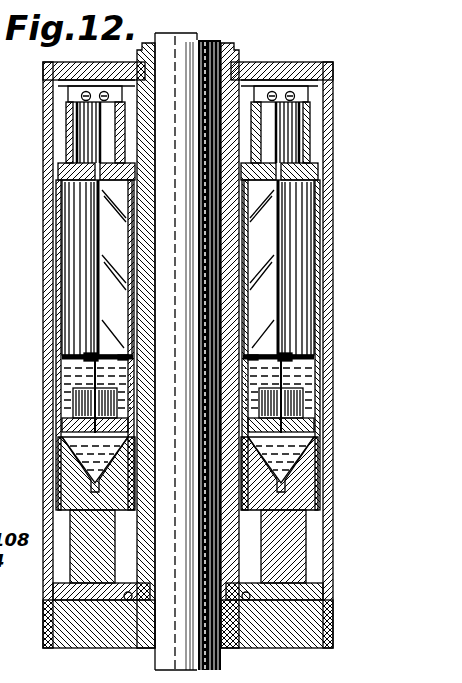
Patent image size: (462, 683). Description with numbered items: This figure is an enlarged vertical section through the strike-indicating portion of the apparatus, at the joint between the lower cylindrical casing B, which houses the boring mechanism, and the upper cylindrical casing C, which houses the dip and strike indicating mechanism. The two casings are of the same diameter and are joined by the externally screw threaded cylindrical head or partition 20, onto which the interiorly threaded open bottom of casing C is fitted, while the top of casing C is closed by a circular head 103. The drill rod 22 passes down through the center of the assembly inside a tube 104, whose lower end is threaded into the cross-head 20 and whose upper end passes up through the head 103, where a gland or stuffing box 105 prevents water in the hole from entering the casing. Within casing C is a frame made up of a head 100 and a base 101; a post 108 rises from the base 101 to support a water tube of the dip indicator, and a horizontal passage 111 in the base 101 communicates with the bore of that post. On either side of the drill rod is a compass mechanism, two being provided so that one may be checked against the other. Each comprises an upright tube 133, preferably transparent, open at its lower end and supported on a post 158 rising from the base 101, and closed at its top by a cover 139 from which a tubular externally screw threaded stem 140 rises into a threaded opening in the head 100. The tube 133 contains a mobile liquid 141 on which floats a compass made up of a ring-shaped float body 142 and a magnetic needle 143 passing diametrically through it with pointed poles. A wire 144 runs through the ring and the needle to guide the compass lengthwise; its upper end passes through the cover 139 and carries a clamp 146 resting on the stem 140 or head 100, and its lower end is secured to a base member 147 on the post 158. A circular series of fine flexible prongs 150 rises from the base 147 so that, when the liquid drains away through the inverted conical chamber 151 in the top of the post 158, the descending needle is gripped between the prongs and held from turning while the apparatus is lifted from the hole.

The cylindrical head or partition 20 is at (298, 645).
The drill rod 22 is at (177, 52).
The head 100 is at (331, 110).
The base 101 is at (52, 598).
The circular head 103 is at (306, 62).
The tube 104 is at (227, 42).
The gland or stuffing box 105 is at (243, 60).
The post 108 is at (251, 220).
The horizontal passage 111 is at (128, 600).
The upright tube 133 is at (58, 266).
The cover 139 is at (58, 173).
The tubular externally screw threaded stem 140 is at (67, 133).
The mobile liquid 141 is at (74, 405).
The float body 142 is at (62, 362).
The magnetic needle 143 is at (70, 367).
The wire 144 is at (93, 292).
The clamp 146 is at (70, 88).
The base member 147 is at (72, 445).
The prongs 150 is at (62, 420).
The inverted conical chamber 151 is at (293, 458).
The hatched block 158 is at (72, 477).
The lower cylindrical casing B is at (331, 643).
The upper cylindrical casing C is at (44, 208).